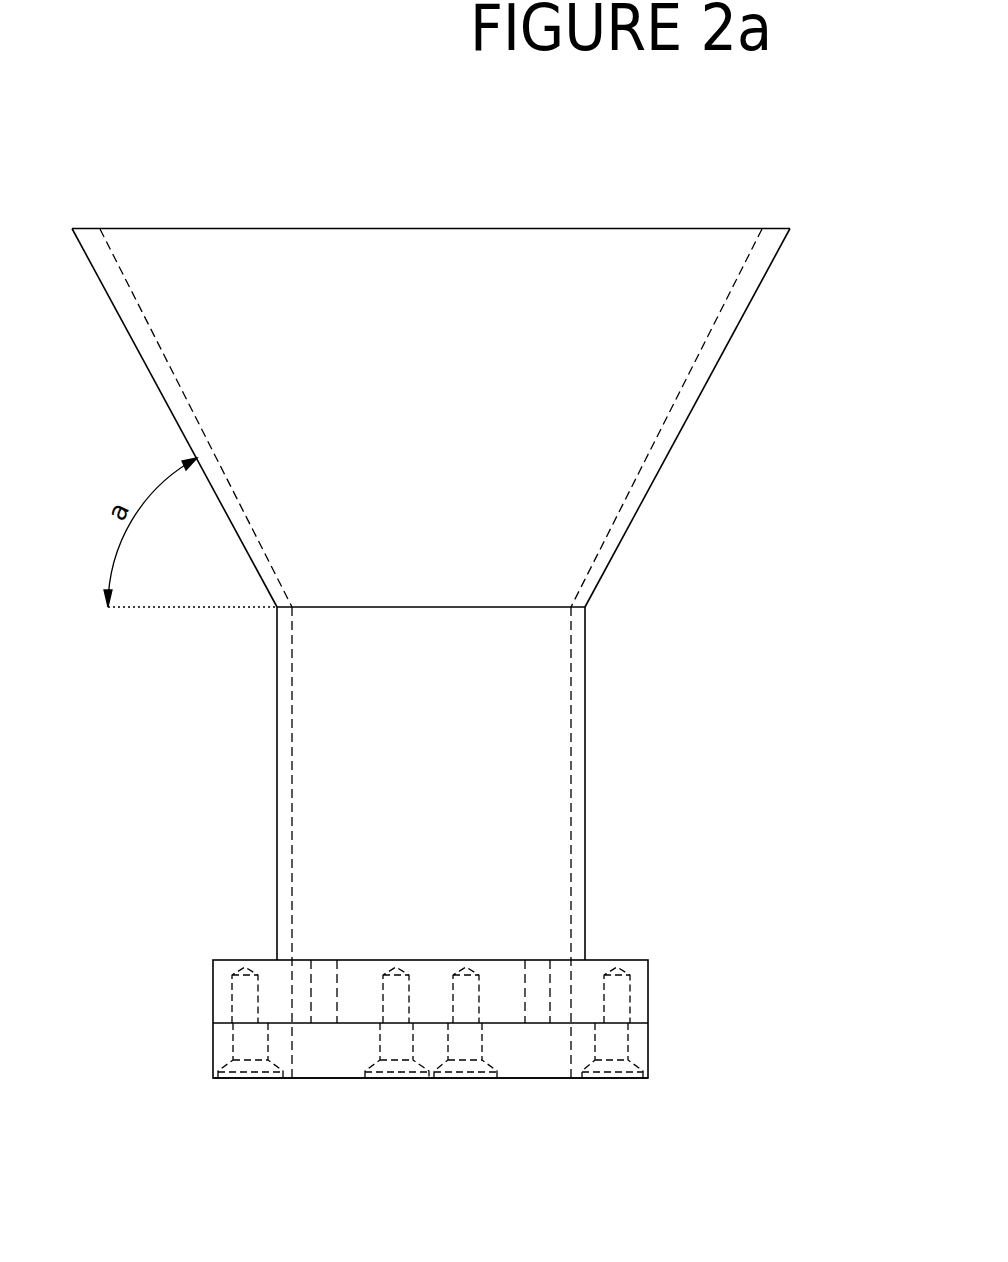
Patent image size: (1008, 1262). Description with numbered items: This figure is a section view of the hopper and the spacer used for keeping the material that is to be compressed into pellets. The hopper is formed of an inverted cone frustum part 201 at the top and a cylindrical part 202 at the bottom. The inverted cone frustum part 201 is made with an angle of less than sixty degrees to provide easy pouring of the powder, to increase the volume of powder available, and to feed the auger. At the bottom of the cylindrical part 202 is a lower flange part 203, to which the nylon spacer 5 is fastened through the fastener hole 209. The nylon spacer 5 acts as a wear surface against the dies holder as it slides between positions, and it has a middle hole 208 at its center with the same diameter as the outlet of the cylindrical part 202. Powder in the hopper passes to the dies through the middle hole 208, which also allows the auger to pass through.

The inverted cone frustum part 201 is at (623, 409).
The cylindrical part 202 is at (579, 789).
The lower flange part 203 is at (638, 968).
The fastener hole 209 is at (610, 1038).
The nylon spacer 5 is at (638, 1045).
The middle hole 208 is at (557, 1062).